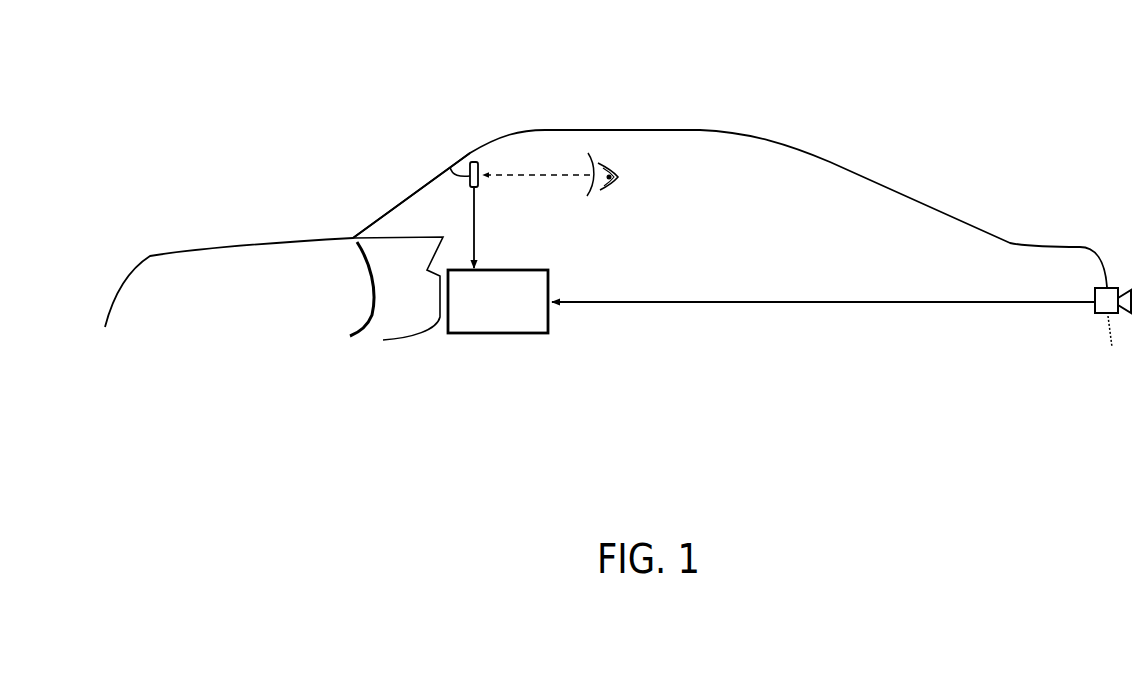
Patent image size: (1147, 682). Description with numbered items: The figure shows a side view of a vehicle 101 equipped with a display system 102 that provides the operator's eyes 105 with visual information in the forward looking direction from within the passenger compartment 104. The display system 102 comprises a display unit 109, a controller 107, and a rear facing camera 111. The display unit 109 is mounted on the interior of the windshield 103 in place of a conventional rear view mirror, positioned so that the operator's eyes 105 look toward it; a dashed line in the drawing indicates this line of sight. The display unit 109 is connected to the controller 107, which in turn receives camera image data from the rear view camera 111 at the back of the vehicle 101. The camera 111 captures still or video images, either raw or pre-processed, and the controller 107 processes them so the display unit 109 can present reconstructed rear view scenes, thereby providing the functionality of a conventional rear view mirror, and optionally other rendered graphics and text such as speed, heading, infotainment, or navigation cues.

The vehicle 101 is at (650, 102).
The display system 102 is at (564, 382).
The windshield 103 is at (423, 182).
The passenger compartment 104 is at (752, 269).
The operator's eyes 105 is at (650, 175).
The controller 107 is at (516, 315).
The display unit 109 is at (503, 210).
The rear facing camera 111 is at (1093, 313).